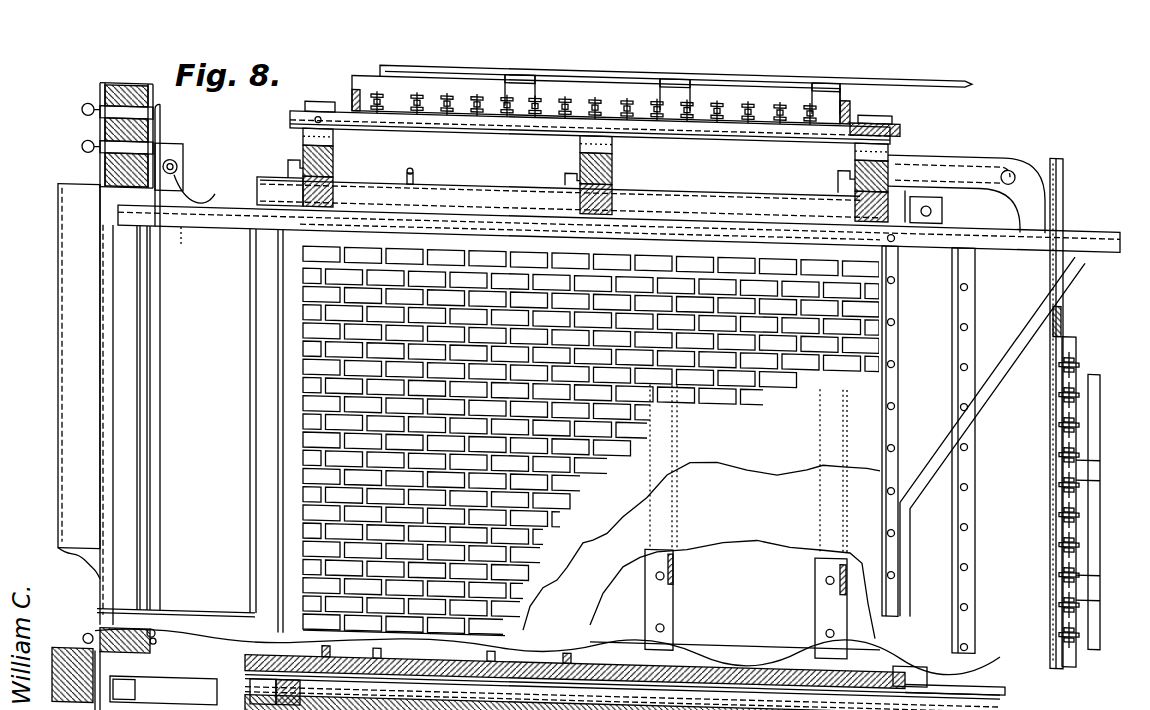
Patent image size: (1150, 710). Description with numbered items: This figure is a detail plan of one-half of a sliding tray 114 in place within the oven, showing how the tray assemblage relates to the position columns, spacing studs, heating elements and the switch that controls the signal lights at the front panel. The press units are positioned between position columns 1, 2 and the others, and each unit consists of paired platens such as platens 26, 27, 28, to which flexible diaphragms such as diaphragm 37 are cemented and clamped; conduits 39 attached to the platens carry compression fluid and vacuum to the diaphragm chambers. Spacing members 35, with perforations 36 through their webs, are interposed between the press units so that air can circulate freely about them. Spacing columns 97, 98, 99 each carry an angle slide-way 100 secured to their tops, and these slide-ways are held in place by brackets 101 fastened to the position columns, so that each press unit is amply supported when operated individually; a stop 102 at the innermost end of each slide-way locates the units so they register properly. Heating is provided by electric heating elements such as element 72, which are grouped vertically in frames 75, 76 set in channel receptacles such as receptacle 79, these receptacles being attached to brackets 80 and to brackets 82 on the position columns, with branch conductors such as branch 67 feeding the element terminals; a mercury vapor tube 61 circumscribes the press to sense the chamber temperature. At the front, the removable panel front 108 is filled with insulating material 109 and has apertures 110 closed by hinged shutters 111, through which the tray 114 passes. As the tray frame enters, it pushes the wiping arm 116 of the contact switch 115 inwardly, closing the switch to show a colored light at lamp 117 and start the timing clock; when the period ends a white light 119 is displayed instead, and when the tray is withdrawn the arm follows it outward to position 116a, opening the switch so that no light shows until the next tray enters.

The position column 1 is at (333, 148).
The position column 2 is at (612, 146).
The platen 26 is at (250, 350).
The platen 27 is at (701, 548).
The platen 28 is at (760, 648).
The spacing member 35 is at (675, 562).
The perforation 36 is at (668, 550).
The flexible diaphragm 37 is at (591, 446).
The conduit 39 is at (385, 642).
The mercury vapor tube 61 is at (413, 160).
The branch 67 is at (1100, 345).
The electric heating element 72 is at (1062, 516).
The frame 75 is at (535, 95).
The frame 76 is at (848, 90).
The channel receptacle 79 is at (898, 104).
The bracket 80 is at (972, 146).
The bracket 82 is at (335, 126).
The spacing column 97 is at (333, 180).
The spacing column 98 is at (612, 185).
The spacing column 99 is at (855, 184).
The angle slide-way 100 is at (258, 190).
The bracket 101 is at (285, 160).
The stop 102 is at (942, 186).
The panel front 108 is at (100, 92).
The insulating material 109 is at (118, 82).
The aperture 110 is at (90, 675).
The hinged shutter 111 is at (58, 290).
The sliding tray 114 is at (1005, 225).
The contact switch 115 is at (178, 142).
The wiping arm 116 is at (193, 182).
The wiping arm position 116a is at (195, 241).
The colored light lamp 117 is at (82, 142).
The white light 119 is at (82, 107).